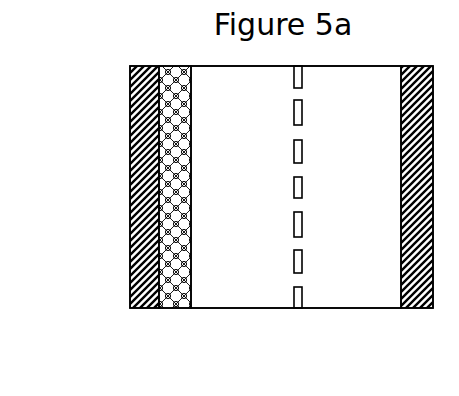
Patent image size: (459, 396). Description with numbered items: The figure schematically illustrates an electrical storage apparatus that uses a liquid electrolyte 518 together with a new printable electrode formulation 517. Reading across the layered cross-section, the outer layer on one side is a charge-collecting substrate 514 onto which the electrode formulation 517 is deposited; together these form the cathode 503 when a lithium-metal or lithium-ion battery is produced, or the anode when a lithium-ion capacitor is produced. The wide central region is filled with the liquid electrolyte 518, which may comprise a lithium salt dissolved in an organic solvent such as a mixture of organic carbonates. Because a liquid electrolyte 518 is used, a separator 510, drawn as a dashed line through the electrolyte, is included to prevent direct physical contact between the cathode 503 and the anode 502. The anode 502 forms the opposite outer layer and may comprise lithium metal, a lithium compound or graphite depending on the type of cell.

The cathode 503 is at (107, 320).
The anode 502 is at (412, 326).
The charge-collecting substrate 514 is at (138, 134).
The printable electrode formulation 517 is at (175, 296).
The liquid electrolyte 518 is at (257, 295).
The separator 510 is at (299, 300).